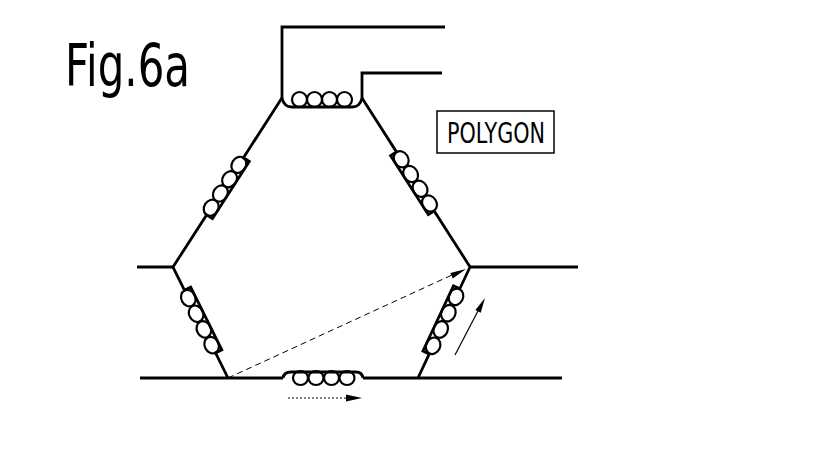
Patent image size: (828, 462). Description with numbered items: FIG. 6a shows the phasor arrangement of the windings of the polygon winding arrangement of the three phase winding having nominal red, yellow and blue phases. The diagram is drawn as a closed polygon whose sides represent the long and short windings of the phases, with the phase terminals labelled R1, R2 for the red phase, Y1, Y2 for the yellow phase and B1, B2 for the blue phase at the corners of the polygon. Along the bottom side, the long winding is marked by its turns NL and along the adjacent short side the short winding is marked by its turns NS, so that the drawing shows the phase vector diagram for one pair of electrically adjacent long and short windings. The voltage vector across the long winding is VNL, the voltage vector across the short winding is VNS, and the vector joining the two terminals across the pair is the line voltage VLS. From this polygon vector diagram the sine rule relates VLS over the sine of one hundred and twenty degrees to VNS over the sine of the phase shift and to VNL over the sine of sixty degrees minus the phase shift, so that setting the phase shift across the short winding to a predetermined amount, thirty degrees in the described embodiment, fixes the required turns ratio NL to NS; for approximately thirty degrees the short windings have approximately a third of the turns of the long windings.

The element R1 is at (381, 54).
The R-phase terminal 2 R2 is at (421, 76).
The B-phase terminal 1 B1 is at (194, 378).
The B-phase terminal 2 B2 is at (139, 267).
The Y-phase terminal 1 Y1 is at (541, 265).
The Y-phase terminal 2 Y2 is at (479, 377).
The long winding turns NL is at (323, 362).
The short winding turns NS is at (439, 322).
The polygon vector line voltage VLS is at (347, 309).
The short winding voltage VNS is at (490, 332).
The long winding voltage VNL is at (325, 421).